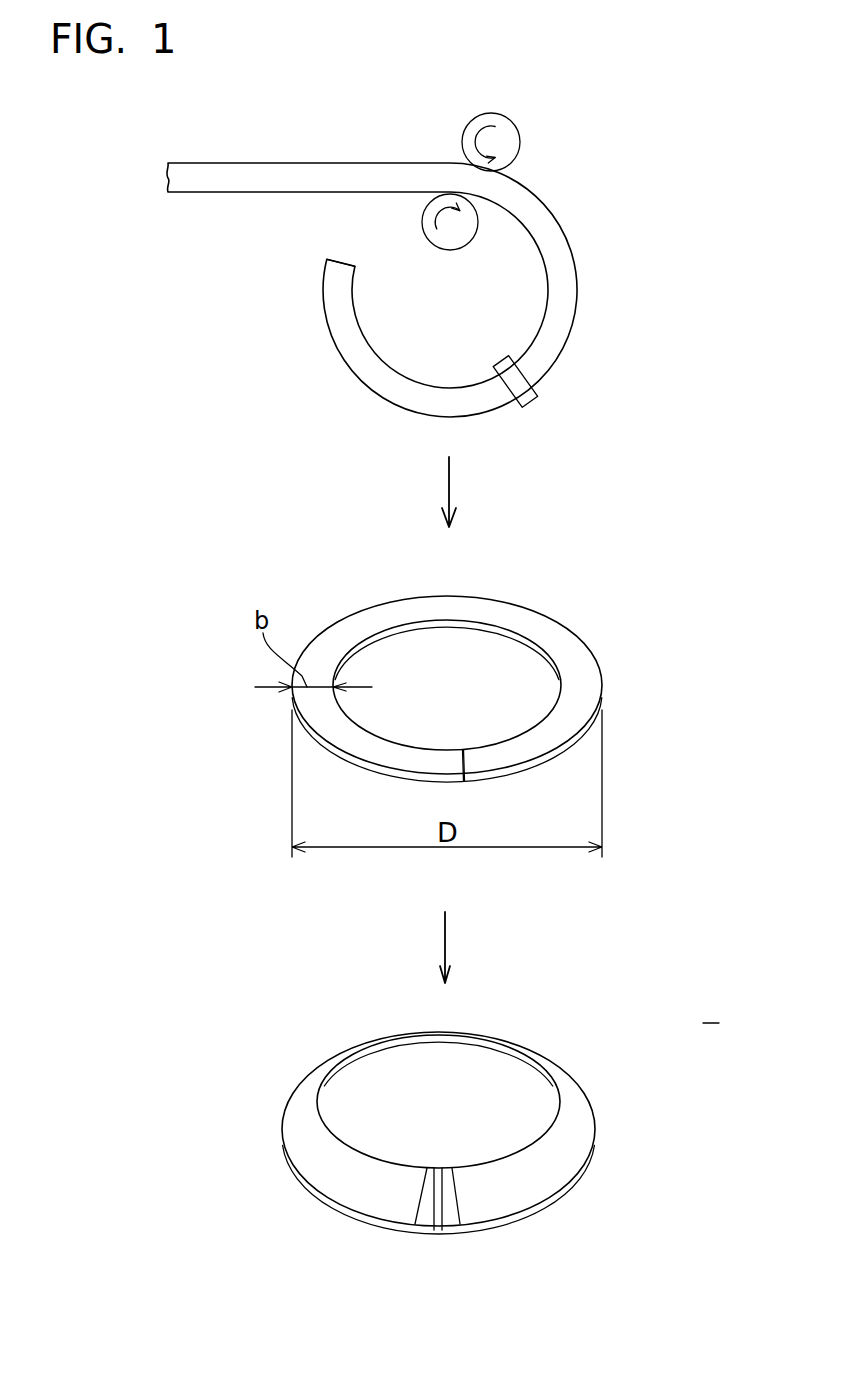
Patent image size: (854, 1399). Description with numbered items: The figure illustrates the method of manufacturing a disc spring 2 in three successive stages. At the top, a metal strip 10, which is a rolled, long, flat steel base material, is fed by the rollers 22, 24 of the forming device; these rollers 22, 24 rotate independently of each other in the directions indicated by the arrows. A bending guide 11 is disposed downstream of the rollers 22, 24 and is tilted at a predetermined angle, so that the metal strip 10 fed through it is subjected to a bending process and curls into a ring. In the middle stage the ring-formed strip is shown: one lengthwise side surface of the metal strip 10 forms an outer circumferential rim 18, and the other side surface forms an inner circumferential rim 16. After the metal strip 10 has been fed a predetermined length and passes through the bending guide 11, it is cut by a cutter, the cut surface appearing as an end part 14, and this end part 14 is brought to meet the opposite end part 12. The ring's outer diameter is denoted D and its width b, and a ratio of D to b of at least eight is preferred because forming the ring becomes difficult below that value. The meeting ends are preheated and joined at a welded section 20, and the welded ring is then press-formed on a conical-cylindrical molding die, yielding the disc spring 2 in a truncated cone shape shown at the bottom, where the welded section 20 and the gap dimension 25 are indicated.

The disc spring 2 is at (501, 1114).
The metal strip 10 is at (240, 177).
The bending guide 11 is at (525, 382).
The end part 12 is at (343, 258).
The end part 14 is at (465, 757).
The inner circumferential rim 16 is at (477, 624).
The outer circumferential rim 18 is at (582, 638).
The welded section 20 is at (464, 1141).
The roller 22 is at (449, 236).
The roller 24 is at (498, 125).
The slit gap at outer periphery 25 is at (434, 1234).